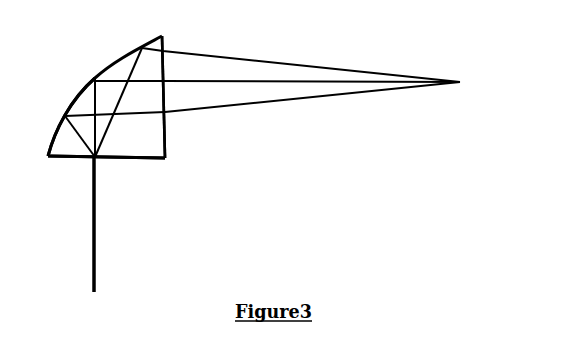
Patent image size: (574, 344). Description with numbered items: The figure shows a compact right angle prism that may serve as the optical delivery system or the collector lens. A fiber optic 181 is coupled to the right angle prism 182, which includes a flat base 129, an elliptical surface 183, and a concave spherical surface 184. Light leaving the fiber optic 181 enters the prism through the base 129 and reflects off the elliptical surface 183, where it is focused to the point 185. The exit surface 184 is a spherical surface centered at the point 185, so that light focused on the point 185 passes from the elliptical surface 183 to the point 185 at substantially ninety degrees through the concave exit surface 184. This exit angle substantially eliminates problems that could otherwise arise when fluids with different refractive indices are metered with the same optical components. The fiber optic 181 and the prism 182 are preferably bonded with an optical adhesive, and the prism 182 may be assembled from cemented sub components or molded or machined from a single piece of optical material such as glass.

The flat base 129 is at (138, 163).
The fiber optic 181 is at (97, 262).
The right angle prism 182 is at (107, 97).
The elliptical surface 183 is at (77, 100).
The concave spherical surface 184 is at (162, 73).
The point 185 is at (327, 80).